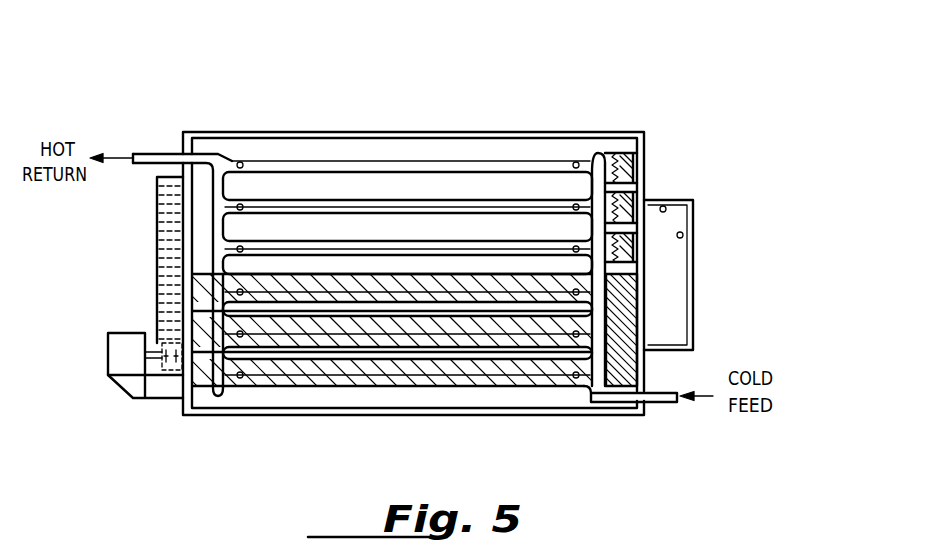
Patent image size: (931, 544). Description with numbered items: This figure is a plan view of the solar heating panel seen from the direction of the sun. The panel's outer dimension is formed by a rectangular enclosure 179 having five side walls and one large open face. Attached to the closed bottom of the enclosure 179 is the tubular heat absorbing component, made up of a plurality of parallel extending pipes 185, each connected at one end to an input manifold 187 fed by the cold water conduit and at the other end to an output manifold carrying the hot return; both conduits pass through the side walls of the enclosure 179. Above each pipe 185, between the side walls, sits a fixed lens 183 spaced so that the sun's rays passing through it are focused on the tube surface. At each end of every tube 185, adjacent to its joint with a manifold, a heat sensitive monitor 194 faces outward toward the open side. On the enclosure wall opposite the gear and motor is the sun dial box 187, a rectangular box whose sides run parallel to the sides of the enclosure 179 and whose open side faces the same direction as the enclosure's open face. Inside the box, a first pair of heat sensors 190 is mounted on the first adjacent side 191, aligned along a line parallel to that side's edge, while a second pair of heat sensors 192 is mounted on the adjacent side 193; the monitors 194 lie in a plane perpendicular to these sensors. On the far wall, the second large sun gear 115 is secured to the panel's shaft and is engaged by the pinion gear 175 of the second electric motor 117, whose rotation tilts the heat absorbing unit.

The second large sun gear 115 is at (168, 256).
The second electric motor 117 is at (123, 343).
The pinion gear 175 is at (172, 378).
The rectangular enclosure 179 is at (282, 132).
The fixed lens 183 is at (520, 384).
The parallel tubular members or pipes 185 is at (387, 160).
The input manifold / sun dial box 187 is at (598, 177).
The first pair of sun dial heat sensors 190 is at (664, 206).
The first adjacent side 191 is at (682, 200).
The second pair of heat sensors 192 is at (683, 234).
The side 193 is at (690, 320).
The heat sensitive monitor 194 is at (238, 162).